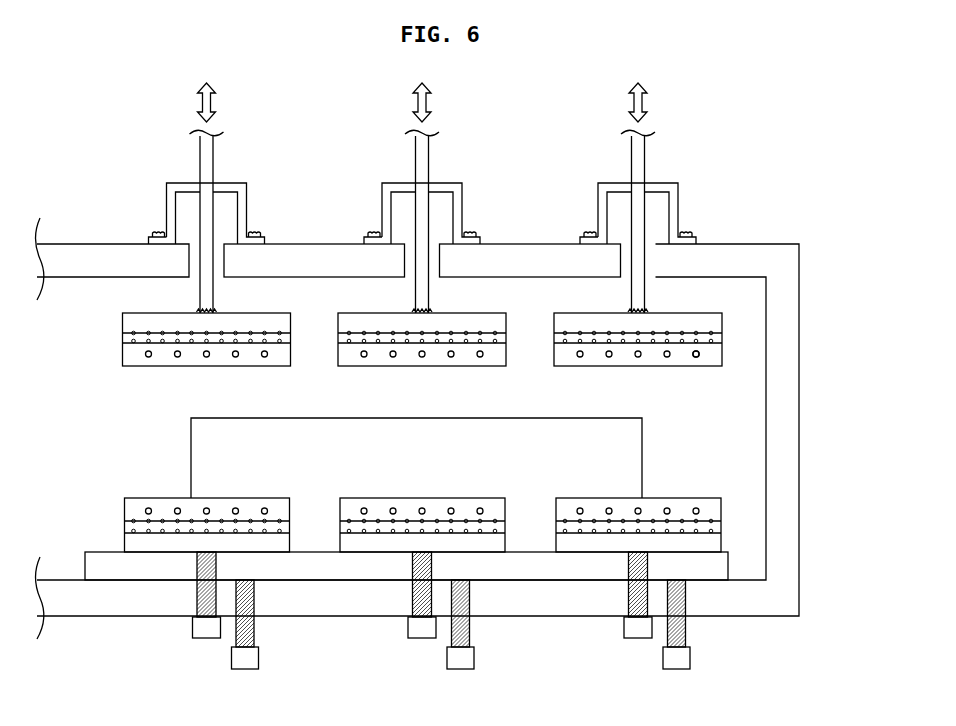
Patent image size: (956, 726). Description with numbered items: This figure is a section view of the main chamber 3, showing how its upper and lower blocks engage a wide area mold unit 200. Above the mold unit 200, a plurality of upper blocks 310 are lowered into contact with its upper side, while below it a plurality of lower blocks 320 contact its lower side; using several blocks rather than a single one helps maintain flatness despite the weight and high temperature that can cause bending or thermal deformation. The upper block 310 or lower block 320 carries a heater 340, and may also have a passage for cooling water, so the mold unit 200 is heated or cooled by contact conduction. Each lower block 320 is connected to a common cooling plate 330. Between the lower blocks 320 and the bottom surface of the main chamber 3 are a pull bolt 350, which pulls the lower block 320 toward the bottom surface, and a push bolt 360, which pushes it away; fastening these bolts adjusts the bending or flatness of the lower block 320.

The main chamber 3 is at (740, 257).
The mold unit 200 is at (197, 452).
The upper block 310 is at (728, 333).
The lower block 320 is at (732, 509).
The common cooling plate 330 is at (703, 572).
The heater 340 is at (698, 358).
The pull bolt 350 is at (198, 627).
The push bolt 360 is at (237, 657).